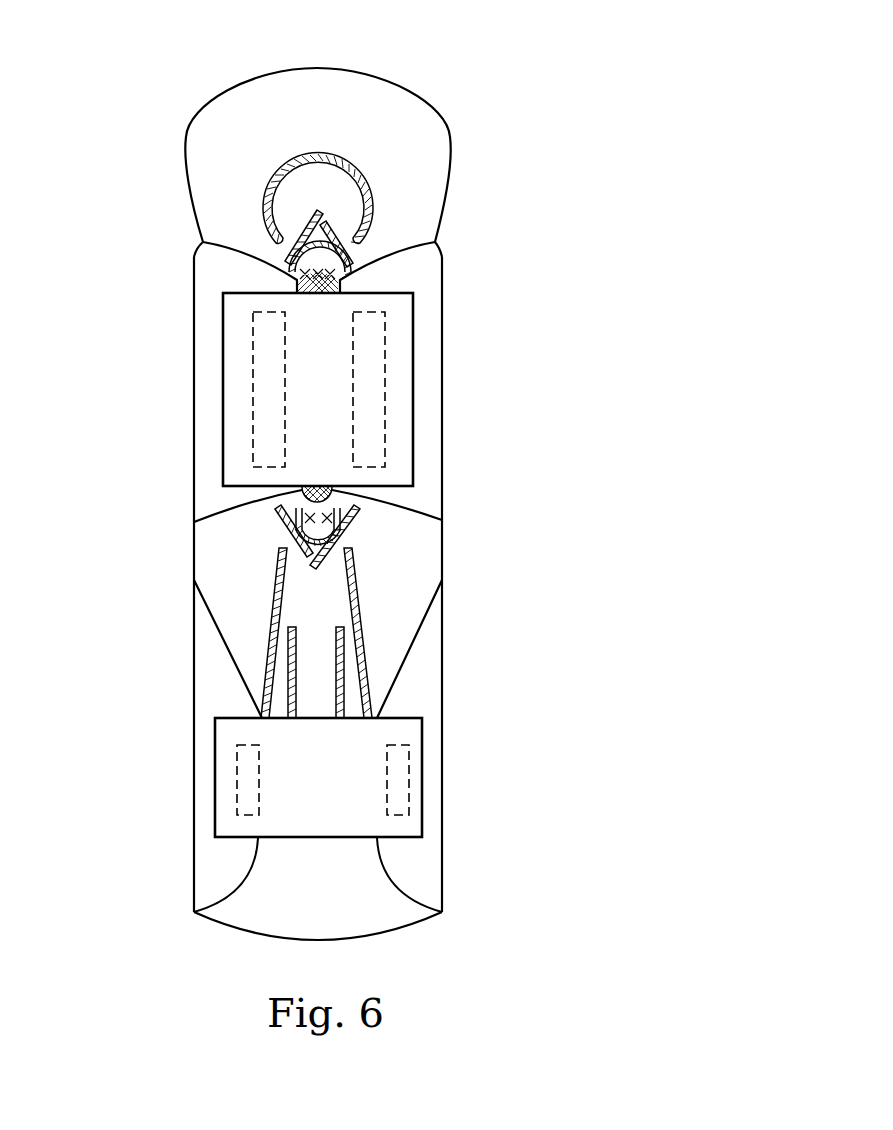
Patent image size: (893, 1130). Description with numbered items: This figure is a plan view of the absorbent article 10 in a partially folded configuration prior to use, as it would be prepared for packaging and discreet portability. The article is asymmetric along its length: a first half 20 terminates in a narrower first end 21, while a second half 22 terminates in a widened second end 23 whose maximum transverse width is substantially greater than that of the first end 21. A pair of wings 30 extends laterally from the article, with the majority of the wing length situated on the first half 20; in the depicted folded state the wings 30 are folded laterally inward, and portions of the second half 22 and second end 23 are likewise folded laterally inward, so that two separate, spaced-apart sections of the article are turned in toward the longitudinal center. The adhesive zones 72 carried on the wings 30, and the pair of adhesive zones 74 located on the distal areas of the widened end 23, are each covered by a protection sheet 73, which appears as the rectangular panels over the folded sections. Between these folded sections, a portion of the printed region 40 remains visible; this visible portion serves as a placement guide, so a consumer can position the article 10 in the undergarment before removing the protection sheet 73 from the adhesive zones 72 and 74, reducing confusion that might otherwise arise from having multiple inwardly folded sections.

The absorbent article 10 is at (105, 180).
The first half 20 is at (495, 263).
The first end 21 is at (480, 108).
The second half 22 is at (467, 623).
The second end 23 is at (177, 897).
The wings 30 is at (413, 503).
The printed region 40 is at (290, 505).
The adhesive zones 72 is at (370, 372).
The protection sheet 73 is at (267, 390).
The adhesive zones 74 is at (398, 780).